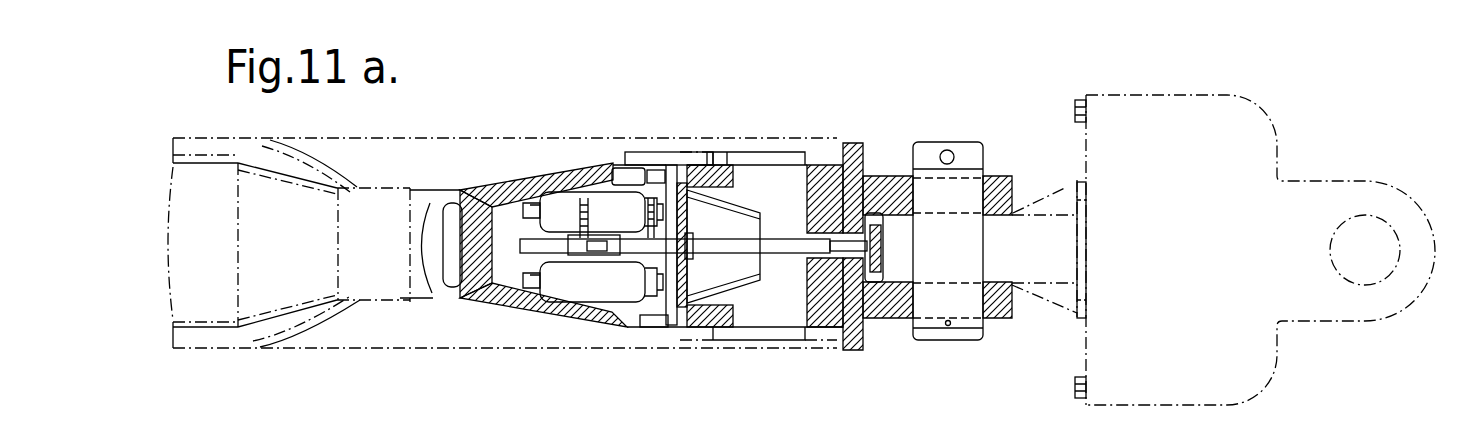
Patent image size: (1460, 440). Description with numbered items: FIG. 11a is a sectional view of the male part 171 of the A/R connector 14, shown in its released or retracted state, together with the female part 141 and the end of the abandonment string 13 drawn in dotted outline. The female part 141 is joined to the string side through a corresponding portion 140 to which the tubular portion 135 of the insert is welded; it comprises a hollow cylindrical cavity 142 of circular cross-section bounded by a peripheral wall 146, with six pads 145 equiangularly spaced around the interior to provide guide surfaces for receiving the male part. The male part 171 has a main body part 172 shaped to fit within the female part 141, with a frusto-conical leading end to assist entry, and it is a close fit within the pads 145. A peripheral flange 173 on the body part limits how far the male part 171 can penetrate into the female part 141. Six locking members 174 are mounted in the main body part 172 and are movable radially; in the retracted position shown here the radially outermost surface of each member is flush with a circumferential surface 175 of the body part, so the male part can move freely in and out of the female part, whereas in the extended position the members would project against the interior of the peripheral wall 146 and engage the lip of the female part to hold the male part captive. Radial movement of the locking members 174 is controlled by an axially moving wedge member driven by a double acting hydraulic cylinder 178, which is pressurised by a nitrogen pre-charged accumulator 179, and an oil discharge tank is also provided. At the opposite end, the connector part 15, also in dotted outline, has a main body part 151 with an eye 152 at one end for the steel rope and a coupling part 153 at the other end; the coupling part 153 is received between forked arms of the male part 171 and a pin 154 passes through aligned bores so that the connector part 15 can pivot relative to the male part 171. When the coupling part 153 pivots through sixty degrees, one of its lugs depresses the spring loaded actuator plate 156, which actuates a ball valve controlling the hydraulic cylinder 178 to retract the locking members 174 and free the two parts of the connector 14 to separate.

The abandonment string 13 is at (193, 345).
The tubular portion 135 is at (333, 352).
The corresponding portion 140 is at (418, 310).
The female part 141 is at (503, 313).
The hollow cylindrical cavity 142 is at (773, 157).
The pads 145 is at (667, 157).
The peripheral wall 146 is at (786, 313).
The A/R connector 14 is at (843, 358).
The connector part 15 is at (1292, 144).
The main body part 151 is at (1257, 357).
The eye 152 is at (1363, 270).
The coupling part 153 is at (1025, 237).
The pin 154 is at (937, 187).
The spring loaded actuator plate 156 is at (880, 275).
The male part 171 is at (716, 156).
The main body part 172 is at (840, 185).
The peripheral flange 173 is at (858, 340).
The locking members 174 is at (765, 307).
The circumferential surface 175 is at (697, 329).
The double acting hydraulic cylinder 178 is at (620, 243).
The nitrogen pre-charged accumulator 179 is at (560, 287).